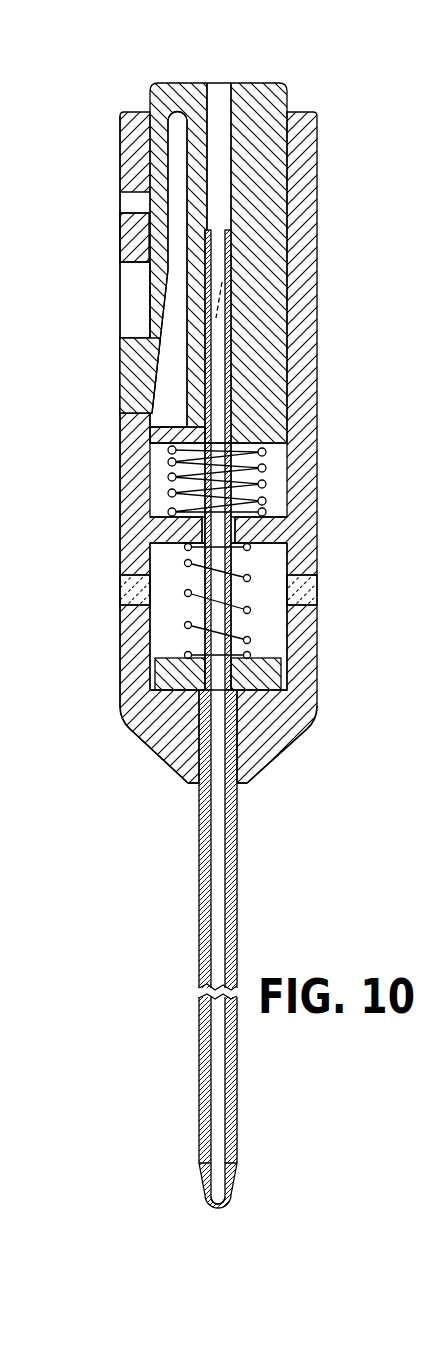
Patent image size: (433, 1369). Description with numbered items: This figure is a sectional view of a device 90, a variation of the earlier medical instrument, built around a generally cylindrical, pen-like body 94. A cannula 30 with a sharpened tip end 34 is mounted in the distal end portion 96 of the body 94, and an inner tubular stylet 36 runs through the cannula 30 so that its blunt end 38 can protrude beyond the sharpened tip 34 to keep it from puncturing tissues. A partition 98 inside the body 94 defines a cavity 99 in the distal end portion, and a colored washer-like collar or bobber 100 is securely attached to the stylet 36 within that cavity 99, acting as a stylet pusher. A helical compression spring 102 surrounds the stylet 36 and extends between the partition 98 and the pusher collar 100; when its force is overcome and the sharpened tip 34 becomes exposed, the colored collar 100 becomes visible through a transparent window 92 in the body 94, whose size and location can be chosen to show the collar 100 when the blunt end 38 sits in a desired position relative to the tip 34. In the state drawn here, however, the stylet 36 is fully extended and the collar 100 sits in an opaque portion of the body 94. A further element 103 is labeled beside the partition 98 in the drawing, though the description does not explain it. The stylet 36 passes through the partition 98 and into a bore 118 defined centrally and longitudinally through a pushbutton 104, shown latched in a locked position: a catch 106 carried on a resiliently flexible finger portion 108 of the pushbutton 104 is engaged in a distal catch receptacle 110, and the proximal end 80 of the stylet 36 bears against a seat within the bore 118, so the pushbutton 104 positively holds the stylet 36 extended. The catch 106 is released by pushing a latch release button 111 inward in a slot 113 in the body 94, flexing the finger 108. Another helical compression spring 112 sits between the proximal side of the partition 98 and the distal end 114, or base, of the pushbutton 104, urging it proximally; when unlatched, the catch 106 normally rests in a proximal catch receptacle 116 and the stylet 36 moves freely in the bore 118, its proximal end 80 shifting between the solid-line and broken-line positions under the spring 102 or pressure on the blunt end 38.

The cannula 30 is at (199, 915).
The sharpened tip end 34 is at (237, 1176).
The inner tubular stylet 36 is at (233, 623).
The blunt end 38 is at (218, 1207).
The proximal end 80 is at (224, 231).
The device 90 is at (83, 137).
The window 92 is at (318, 593).
The body 94 is at (318, 322).
The distal end portion 96 is at (282, 757).
The partition 98 is at (160, 553).
The cavity 99 is at (168, 628).
The stylet pusher collar 100 is at (165, 648).
The helical compression spring 102 is at (248, 567).
The partition 103 is at (255, 530).
The pushbutton 104 is at (263, 83).
The catch 106 is at (140, 273).
The resiliently flexible finger portion 108 is at (150, 318).
The distal catch receptacle 110 is at (123, 262).
The latch release button 111 is at (120, 378).
The helical compression spring 112 is at (267, 483).
The slot 113 is at (138, 305).
The distal end 114 is at (158, 448).
The proximal catch receptacle 116 is at (120, 192).
The bore 118 is at (217, 92).